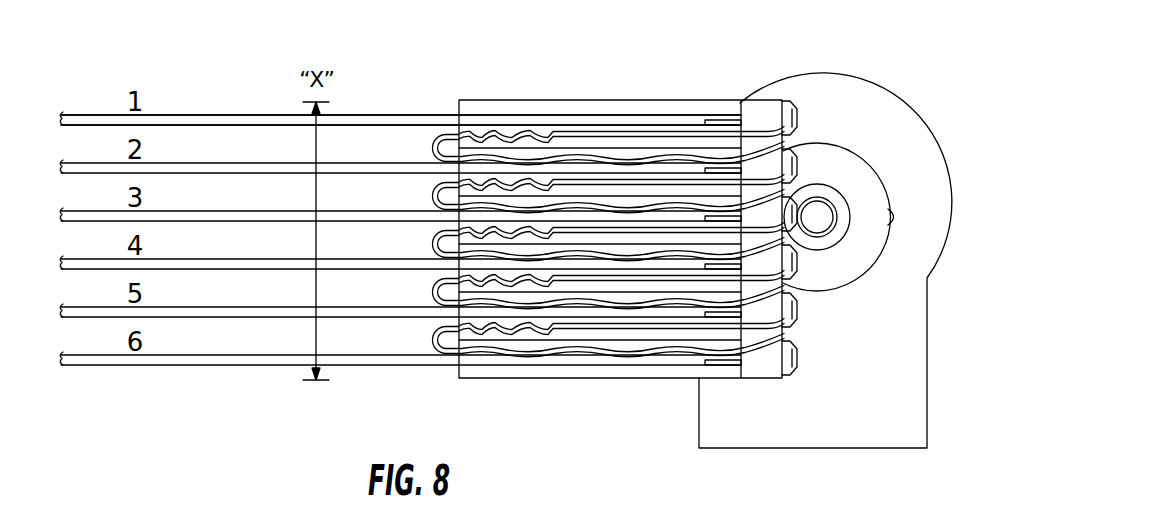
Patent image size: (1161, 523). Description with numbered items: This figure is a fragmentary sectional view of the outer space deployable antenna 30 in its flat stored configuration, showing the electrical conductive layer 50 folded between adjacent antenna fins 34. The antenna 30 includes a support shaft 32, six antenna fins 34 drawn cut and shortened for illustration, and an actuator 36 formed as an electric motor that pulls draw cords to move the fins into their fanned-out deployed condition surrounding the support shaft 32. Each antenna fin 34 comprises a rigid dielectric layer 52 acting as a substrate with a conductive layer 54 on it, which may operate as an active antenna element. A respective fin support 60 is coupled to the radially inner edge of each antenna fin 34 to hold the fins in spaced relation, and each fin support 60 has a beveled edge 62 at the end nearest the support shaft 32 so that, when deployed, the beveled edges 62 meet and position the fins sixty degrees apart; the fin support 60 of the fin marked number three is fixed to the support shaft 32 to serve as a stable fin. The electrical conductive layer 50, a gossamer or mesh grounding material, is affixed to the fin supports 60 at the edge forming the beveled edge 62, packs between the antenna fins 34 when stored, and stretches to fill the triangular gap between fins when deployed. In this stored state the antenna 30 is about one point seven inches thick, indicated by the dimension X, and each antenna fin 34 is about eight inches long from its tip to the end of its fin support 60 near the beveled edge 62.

The outer space deployable antenna 30 is at (546, 62).
The support shaft 32 is at (818, 212).
The antenna fins 34 is at (103, 167).
The actuator 36 is at (846, 132).
The electrical conductive layer 50 is at (437, 200).
The rigid dielectric layer 52 is at (217, 124).
The conductive layer 54 is at (193, 115).
The fin support 60 is at (692, 103).
The beveled edge 62 is at (787, 106).